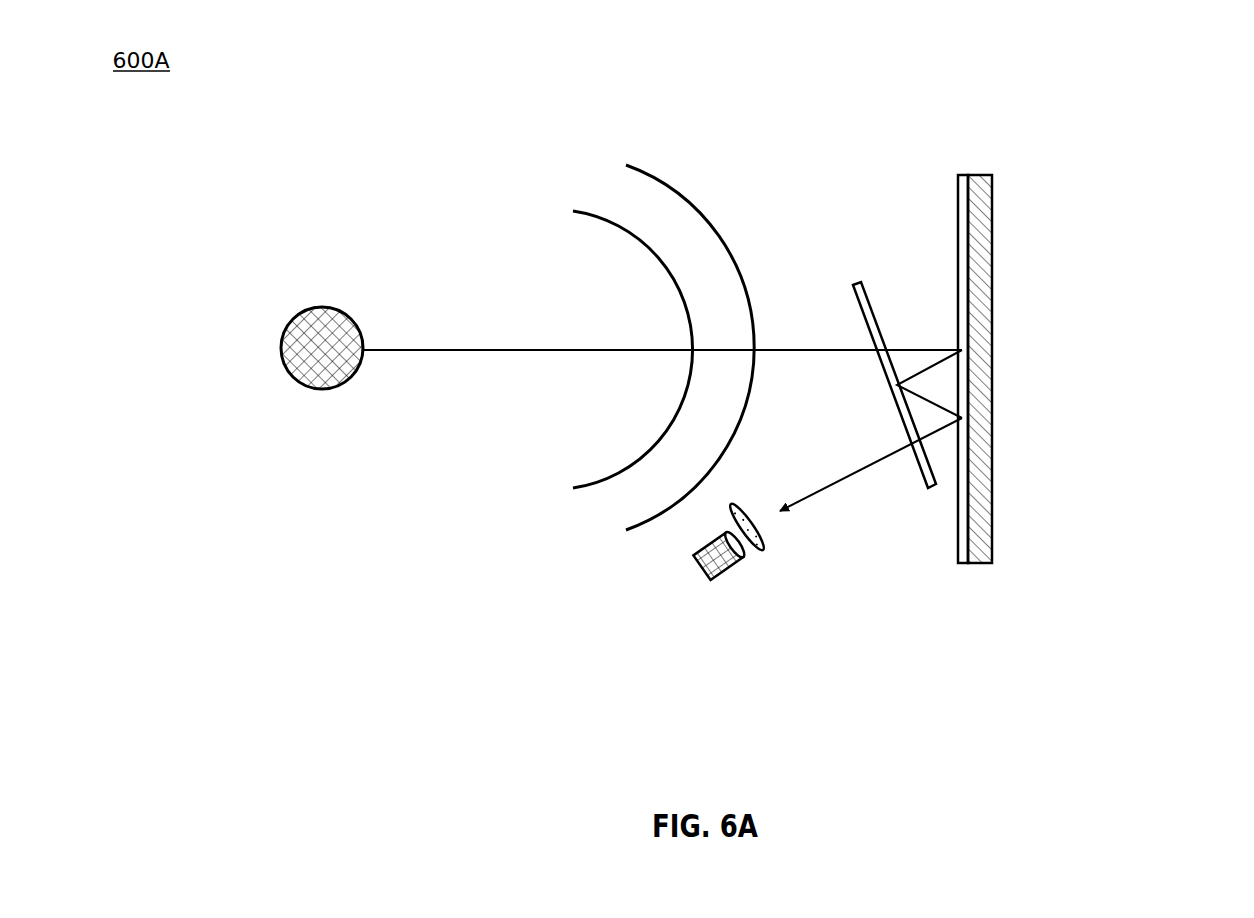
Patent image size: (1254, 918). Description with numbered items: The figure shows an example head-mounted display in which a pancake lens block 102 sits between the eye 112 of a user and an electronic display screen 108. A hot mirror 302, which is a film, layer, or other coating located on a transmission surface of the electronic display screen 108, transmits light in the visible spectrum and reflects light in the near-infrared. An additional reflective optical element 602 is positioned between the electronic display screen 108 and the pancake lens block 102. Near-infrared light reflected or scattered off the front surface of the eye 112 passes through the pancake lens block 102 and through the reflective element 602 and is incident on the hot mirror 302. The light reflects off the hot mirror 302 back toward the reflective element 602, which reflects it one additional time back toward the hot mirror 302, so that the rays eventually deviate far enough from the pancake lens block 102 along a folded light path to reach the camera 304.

The eye 112 is at (322, 307).
The pancake lens block 102 is at (567, 540).
The reflective optical element 602 is at (853, 285).
The hot mirror 302 is at (958, 175).
The electronic display screen 108 is at (992, 437).
The camera 304 is at (732, 576).